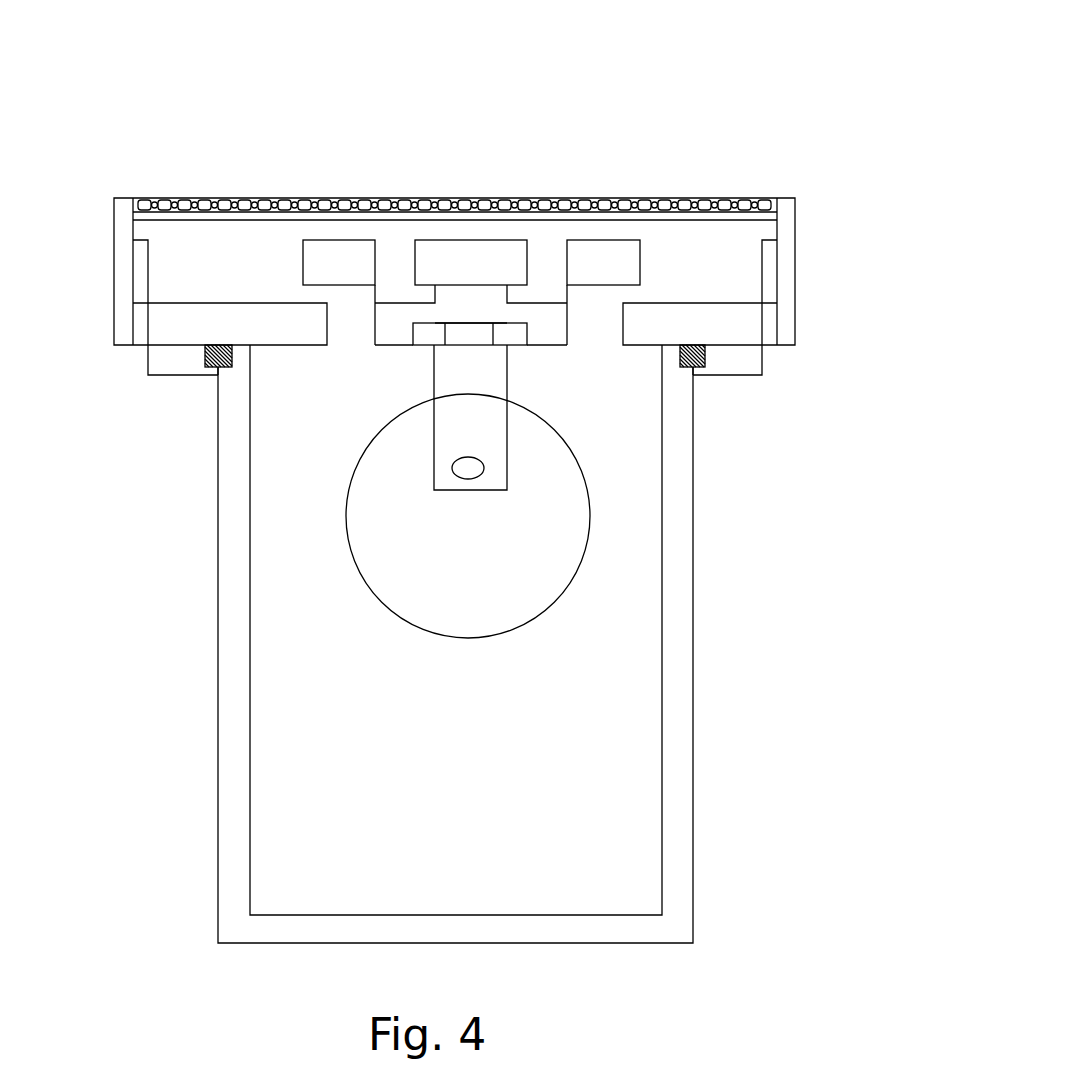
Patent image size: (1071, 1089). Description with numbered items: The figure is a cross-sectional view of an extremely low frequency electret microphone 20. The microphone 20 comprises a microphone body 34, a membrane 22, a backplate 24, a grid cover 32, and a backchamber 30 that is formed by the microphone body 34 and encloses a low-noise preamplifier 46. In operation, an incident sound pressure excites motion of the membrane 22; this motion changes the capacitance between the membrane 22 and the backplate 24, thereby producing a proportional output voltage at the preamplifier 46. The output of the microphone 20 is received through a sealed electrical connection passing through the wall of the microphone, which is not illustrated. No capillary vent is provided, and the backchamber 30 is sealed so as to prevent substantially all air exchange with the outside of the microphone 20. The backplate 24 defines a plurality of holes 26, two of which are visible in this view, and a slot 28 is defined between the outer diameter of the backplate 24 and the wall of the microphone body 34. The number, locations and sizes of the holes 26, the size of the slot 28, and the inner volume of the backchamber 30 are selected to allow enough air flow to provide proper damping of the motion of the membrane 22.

The microphone 20 is at (690, 41).
The membrane 22 is at (438, 243).
The backplate 24 is at (443, 213).
The holes 26 is at (432, 226).
The slot 28 is at (450, 237).
The backchamber 30 is at (501, 644).
The grid cover 32 is at (454, 176).
The microphone body 34 is at (413, 499).
The low-noise preamplifier 46 is at (565, 518).